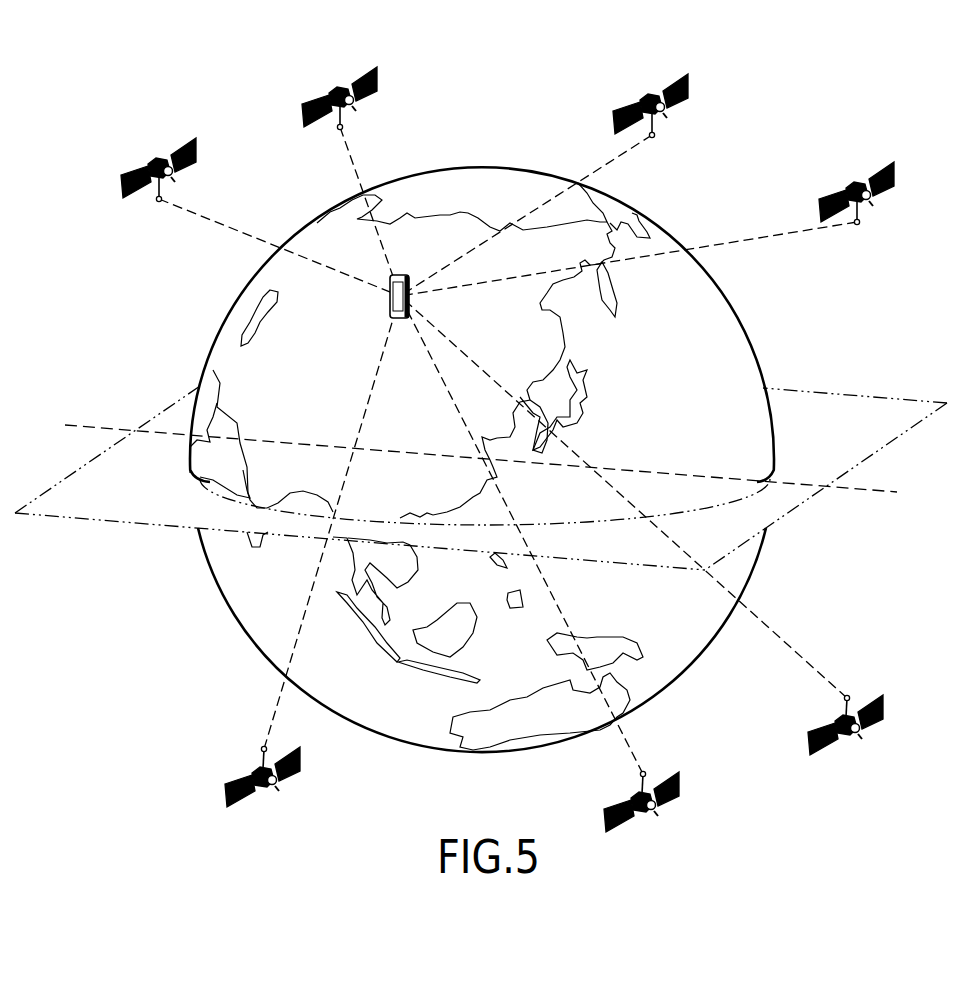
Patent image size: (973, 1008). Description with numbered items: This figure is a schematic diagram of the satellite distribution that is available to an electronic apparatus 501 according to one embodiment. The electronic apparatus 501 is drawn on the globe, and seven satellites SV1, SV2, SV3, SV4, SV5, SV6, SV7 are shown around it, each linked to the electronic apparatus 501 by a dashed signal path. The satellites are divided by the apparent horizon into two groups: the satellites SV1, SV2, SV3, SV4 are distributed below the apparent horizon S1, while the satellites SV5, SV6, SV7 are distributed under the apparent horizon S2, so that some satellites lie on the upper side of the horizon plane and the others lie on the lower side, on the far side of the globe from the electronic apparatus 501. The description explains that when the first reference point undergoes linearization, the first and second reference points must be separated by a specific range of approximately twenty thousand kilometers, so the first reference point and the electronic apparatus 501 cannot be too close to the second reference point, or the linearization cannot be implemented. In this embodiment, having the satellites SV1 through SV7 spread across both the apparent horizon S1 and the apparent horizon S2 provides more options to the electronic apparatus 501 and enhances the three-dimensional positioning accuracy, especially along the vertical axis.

The satellite SV1 is at (258, 212).
The satellite SV2 is at (348, 177).
The satellite SV3 is at (544, 179).
The satellite SV4 is at (647, 223).
The satellite SV5 is at (312, 561).
The satellite SV6 is at (541, 573).
The satellite SV7 is at (641, 534).
The electronic apparatus 501 is at (391, 295).
The apparent horizon S1 is at (228, 340).
The apparent horizon S2 is at (254, 617).